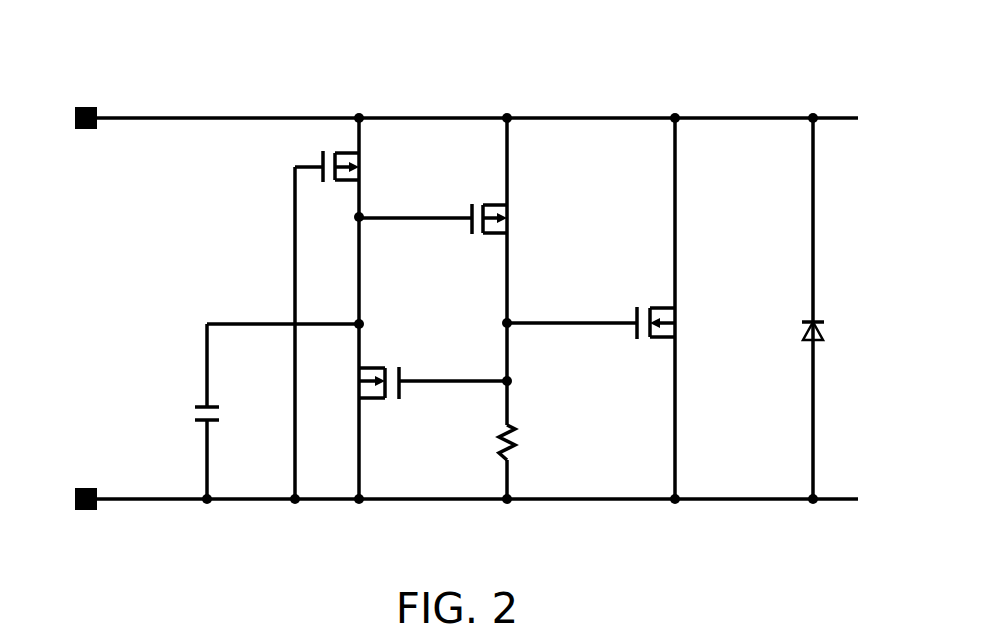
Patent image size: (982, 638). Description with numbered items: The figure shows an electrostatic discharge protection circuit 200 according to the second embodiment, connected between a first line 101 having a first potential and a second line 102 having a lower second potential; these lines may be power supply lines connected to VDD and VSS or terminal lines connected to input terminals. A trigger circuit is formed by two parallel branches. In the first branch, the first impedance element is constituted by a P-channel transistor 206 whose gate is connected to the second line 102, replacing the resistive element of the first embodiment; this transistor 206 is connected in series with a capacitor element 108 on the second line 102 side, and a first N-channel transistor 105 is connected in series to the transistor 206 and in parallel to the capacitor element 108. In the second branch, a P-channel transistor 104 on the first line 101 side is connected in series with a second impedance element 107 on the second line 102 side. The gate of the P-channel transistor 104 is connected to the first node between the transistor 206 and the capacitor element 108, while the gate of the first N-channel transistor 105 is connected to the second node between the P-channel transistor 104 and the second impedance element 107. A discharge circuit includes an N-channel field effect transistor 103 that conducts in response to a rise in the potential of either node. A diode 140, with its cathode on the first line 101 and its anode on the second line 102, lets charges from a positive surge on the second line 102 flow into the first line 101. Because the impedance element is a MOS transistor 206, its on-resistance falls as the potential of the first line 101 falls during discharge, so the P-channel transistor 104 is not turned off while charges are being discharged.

The electrostatic discharge protection circuit 200 is at (727, 62).
The first line 101 is at (98, 106).
The second line 102 is at (96, 511).
The field effect transistor 103 is at (688, 318).
The P-channel transistor 104 is at (516, 210).
The first N-channel transistor 105 is at (372, 407).
The second impedance element 107 is at (519, 455).
The capacitor element 108 is at (228, 423).
The diode 140 is at (826, 334).
The P-channel transistor 206 is at (366, 150).